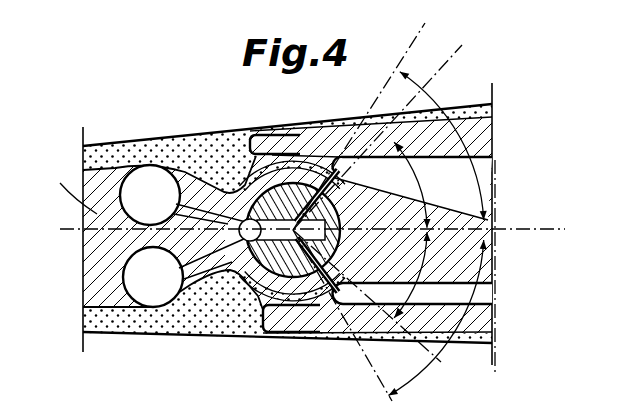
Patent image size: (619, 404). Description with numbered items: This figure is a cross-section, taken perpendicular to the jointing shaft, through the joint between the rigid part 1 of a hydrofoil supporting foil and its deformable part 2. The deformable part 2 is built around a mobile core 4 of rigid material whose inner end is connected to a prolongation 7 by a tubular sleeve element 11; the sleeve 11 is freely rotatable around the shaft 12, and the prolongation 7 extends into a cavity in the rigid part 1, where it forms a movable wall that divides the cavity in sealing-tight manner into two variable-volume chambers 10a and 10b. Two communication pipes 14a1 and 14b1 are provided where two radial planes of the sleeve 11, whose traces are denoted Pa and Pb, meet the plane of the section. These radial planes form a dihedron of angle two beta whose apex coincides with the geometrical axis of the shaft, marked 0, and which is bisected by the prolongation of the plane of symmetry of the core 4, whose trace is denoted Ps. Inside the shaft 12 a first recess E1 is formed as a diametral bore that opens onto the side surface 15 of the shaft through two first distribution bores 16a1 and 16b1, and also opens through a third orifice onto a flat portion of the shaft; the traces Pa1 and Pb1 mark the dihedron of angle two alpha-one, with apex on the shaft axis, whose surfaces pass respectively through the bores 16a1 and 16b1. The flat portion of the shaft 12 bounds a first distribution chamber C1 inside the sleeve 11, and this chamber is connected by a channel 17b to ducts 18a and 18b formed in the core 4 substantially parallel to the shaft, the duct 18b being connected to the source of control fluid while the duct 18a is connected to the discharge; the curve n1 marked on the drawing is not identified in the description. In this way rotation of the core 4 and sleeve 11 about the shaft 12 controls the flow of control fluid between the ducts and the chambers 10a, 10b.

The geometrical axis of the shaft 0 is at (240, 312).
The rigid part 1 is at (337, 345).
The deformable part 2 is at (103, 338).
The mobile core 4 is at (100, 270).
The prolongation 7 is at (460, 253).
The variable-volume chamber 10a is at (463, 197).
The variable-volume chamber 10b is at (443, 297).
The tubular sleeve element 11 is at (262, 176).
The shaft 12 is at (287, 330).
The communication pipe 14a1 is at (355, 190).
The communication pipe 14b1 is at (320, 300).
The side surface of shaft 15 is at (300, 136).
The first distribution bore 16a1 is at (257, 137).
The first distribution bore 16b1 is at (265, 325).
The channel 17b is at (62, 193).
The duct 18a is at (183, 195).
The second parallel duct 18b is at (184, 272).
The first distribution chamber C1 is at (200, 187).
The first recess E1 is at (250, 178).
The lower lobe curve n1 is at (165, 330).
The radial plane trace Pa is at (460, 62).
The dihedron trace Pa1 is at (410, 43).
The radial plane trace Pb is at (437, 367).
The dihedron trace Pb1 is at (372, 379).
The plane of symmetry trace Ps is at (537, 213).